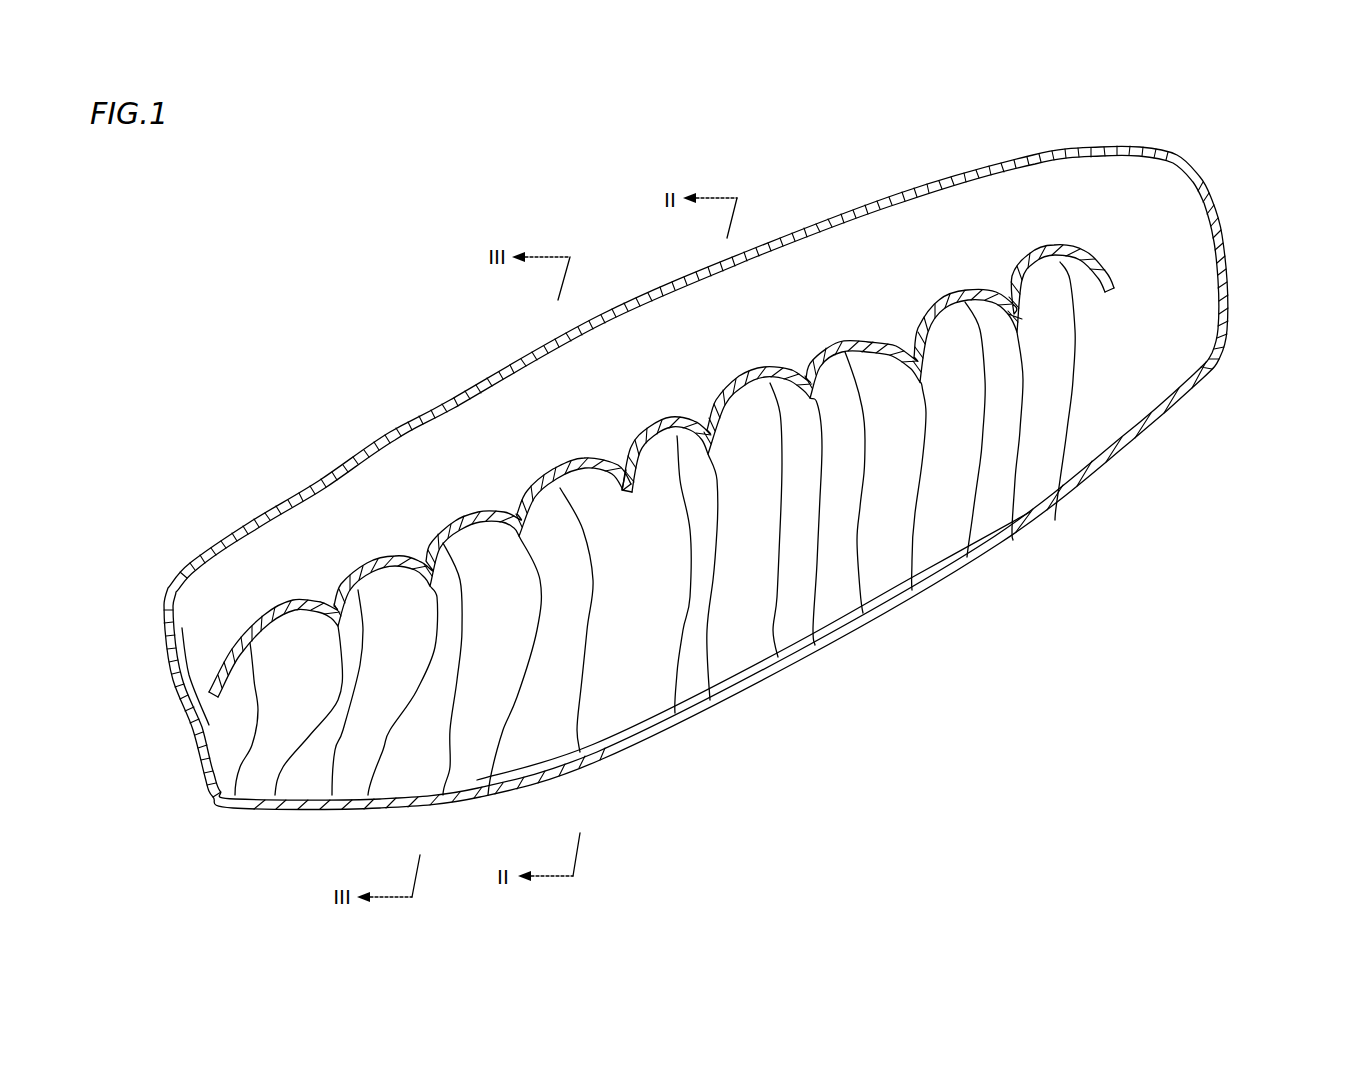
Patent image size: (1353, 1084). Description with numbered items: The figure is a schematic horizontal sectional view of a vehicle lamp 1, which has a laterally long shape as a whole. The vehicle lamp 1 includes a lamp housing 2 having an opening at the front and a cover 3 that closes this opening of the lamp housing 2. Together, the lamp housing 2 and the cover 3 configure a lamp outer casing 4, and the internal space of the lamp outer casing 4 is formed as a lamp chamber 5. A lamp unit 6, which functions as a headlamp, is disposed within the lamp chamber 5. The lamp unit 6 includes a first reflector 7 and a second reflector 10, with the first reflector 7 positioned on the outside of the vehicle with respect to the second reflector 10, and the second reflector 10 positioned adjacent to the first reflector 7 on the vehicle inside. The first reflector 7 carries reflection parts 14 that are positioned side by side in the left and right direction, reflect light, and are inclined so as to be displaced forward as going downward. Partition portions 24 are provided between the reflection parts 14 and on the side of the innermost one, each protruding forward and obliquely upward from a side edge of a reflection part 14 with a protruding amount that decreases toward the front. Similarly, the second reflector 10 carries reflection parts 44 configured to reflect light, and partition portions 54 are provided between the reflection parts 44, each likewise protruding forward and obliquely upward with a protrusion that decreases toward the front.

The vehicle lamp 1 is at (328, 290).
The lamp housing 2 is at (1212, 191).
The cover 3 is at (1228, 261).
The lamp outer casing 4 is at (1305, 158).
The lamp chamber 5 is at (634, 383).
The lamp unit 6 is at (750, 365).
The first reflector 7 is at (863, 337).
The second reflector 10 is at (467, 513).
The reflection parts 14 is at (1068, 550).
The partition portions 24 is at (1026, 570).
The reflection parts 44 is at (587, 790).
The partition portions 54 is at (493, 830).